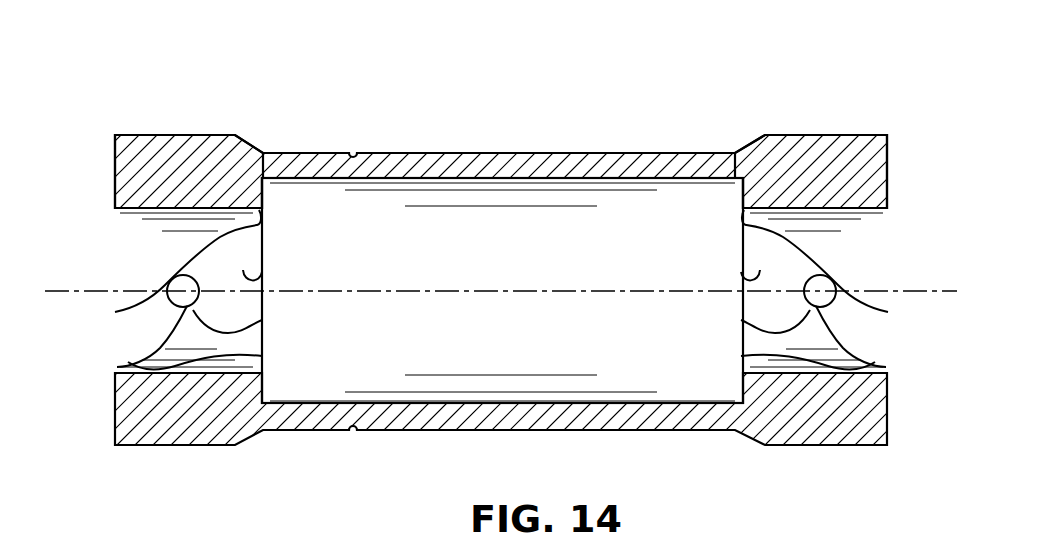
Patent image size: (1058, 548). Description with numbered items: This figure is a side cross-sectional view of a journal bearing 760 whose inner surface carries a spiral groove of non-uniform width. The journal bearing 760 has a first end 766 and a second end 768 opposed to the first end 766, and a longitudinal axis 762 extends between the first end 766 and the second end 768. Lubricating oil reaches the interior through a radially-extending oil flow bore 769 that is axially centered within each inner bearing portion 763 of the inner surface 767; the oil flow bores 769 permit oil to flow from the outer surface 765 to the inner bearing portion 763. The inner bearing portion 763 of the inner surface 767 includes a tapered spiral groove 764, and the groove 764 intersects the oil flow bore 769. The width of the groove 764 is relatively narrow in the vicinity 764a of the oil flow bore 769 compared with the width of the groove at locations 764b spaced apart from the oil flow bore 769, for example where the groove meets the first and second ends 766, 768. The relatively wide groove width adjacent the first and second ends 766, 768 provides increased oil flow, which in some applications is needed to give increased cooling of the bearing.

The journal bearing 760 is at (372, 100).
The longitudinal axis 762 is at (496, 288).
The inner bearing portion 763 is at (262, 228).
The tapered spiral groove 764 is at (262, 321).
The vicinity of the oil flow bore 764a is at (743, 321).
The locations spaced apart from the oil flow bore 764b is at (262, 281).
The outer surface 765 is at (485, 150).
The first end 766 is at (133, 148).
The inner surface 767 is at (583, 180).
The second end 768 is at (866, 147).
The oil flow bore 769 is at (178, 279).